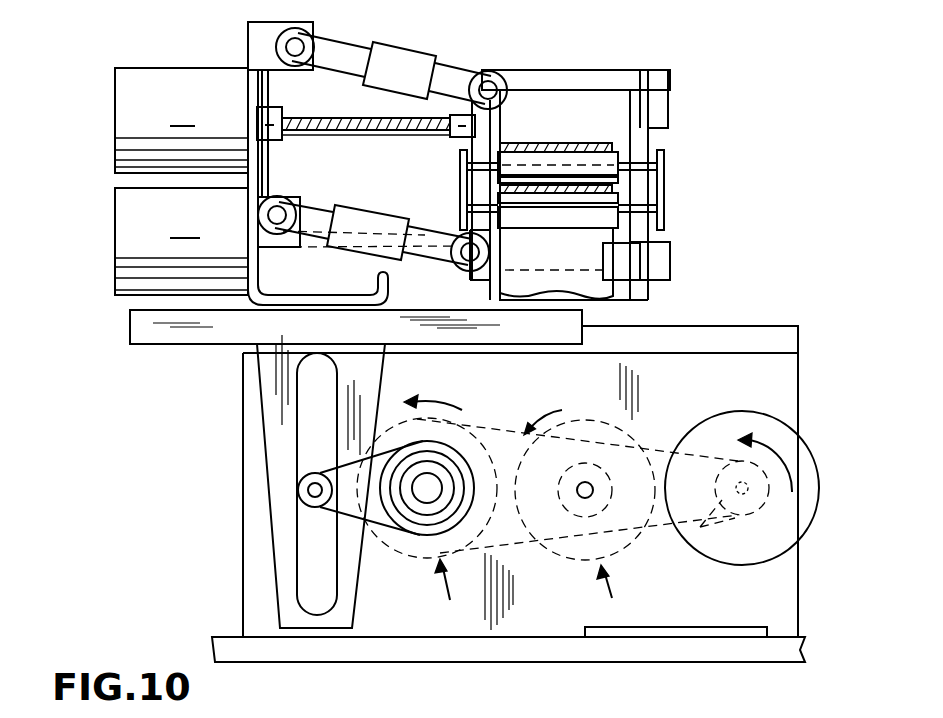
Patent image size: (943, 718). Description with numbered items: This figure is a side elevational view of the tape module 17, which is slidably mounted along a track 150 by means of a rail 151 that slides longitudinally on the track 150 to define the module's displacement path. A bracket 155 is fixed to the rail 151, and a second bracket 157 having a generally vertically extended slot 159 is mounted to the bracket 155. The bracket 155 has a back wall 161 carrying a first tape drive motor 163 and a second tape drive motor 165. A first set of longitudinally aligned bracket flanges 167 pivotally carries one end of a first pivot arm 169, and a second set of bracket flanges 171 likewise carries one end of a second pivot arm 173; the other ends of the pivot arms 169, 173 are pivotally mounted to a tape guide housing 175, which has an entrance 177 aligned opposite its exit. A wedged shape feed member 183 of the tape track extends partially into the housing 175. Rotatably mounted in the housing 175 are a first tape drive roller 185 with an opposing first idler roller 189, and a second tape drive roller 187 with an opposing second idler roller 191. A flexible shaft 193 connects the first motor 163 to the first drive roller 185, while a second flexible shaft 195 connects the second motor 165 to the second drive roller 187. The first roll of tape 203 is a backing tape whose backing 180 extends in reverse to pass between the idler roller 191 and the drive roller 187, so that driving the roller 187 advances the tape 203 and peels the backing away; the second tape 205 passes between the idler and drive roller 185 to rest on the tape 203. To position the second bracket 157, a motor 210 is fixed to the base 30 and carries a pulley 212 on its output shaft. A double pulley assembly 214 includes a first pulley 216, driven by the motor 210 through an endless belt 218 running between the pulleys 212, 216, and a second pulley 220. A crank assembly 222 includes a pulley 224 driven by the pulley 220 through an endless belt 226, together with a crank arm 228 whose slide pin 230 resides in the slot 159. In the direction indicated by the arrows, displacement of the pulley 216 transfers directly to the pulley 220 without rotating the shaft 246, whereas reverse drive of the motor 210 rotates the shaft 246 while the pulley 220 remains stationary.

The bracket 155 is at (230, 21).
The back wall 161 is at (248, 57).
The first tape drive motor 163 is at (115, 95).
The second tape drive motor 165 is at (115, 210).
The first set of bracket flanges 167 is at (287, 22).
The flexible shaft 193 is at (383, 117).
The first pivot arm 169 is at (453, 63).
The tape guide housing 175 is at (567, 68).
The entrance 177 is at (583, 97).
The second roll of tape 205 is at (590, 143).
The tape module 17 is at (724, 64).
The first tape drive roller 185 is at (627, 110).
The first idler roller 189 is at (612, 157).
The first roll of tape 203 is at (600, 187).
The wedged shape feed member 183 is at (620, 206).
The second idler roller 191 is at (660, 242).
The second tape drive roller 187 is at (670, 258).
The backing 180 is at (613, 290).
The track 150 is at (745, 326).
The second set of bracket flanges 171 is at (290, 193).
The second pivot arm 173 is at (423, 222).
The second flexible shaft 195 is at (300, 245).
The rail 151 is at (163, 346).
The second bracket 157 is at (257, 370).
The slot 159 is at (302, 410).
The slide pin 230 is at (313, 493).
The base 30 is at (225, 637).
The pulley 224 is at (495, 467).
The second pulley 220 is at (587, 430).
The first pulley 216 is at (670, 437).
The endless belt 218 is at (713, 420).
The shaft 246 is at (593, 494).
The pulley 212 is at (686, 562).
The crank assembly 222 is at (455, 596).
The crank arm 228 is at (388, 537).
The endless belt 226 is at (505, 548).
The double pulley assembly 214 is at (676, 601).
The motor 210 is at (748, 567).